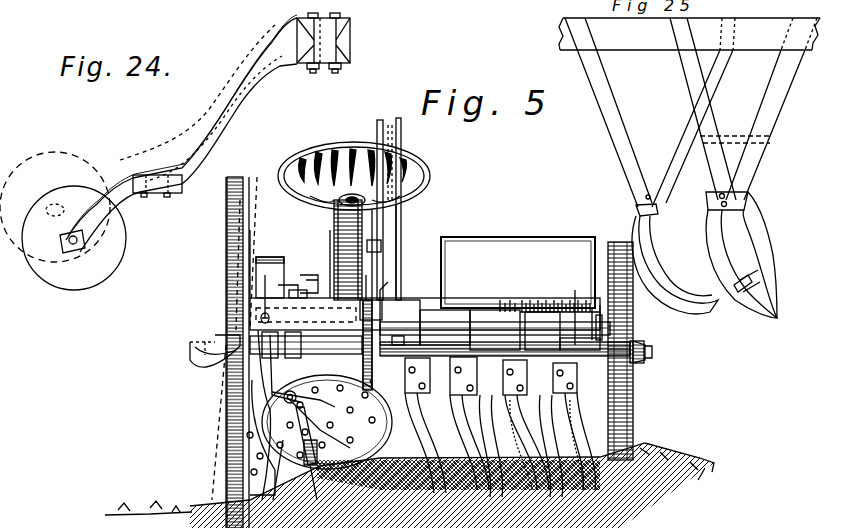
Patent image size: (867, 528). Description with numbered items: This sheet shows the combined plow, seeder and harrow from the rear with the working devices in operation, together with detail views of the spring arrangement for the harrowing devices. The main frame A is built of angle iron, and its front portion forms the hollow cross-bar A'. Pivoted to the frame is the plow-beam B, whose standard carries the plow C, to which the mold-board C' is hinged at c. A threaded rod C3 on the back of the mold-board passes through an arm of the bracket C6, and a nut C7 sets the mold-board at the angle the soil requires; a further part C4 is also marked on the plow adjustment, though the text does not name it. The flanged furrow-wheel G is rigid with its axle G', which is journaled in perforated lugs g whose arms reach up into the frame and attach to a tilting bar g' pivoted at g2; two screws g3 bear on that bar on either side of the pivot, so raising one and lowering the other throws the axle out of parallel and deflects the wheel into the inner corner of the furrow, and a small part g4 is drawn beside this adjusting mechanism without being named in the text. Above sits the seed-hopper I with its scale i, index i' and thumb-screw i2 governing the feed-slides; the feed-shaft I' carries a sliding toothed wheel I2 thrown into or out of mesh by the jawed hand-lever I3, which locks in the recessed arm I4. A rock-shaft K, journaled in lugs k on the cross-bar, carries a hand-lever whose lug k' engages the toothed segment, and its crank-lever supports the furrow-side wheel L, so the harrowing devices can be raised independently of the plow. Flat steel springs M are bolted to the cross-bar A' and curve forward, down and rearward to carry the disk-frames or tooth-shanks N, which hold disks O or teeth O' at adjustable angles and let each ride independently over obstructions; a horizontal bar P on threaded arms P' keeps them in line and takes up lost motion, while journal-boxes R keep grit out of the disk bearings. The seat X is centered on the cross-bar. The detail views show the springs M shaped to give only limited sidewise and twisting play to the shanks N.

In FIG. 24, the disk-frame or tooth-shank N is at (125, 198).
In FIG. 25, the disk-frame or tooth-shank N is at (706, 255).
In FIG. 24, the flat steel spring M is at (208, 132).
In FIG. 25, the flat steel spring M is at (622, 122).
In FIG. 25, the front cross-bar A' is at (689, 34).
In FIG. 5, the furrow-wheel G is at (223, 352).
In FIG. 5, the perforated lug g is at (215, 362).
In FIG. 5, the tilting bar g' is at (274, 299).
In FIG. 5, the pivot g2 is at (300, 289).
In FIG. 5, the screws or threaded bolts g3 is at (314, 270).
In FIG. 5, the latch g4 is at (288, 286).
In FIG. 5, the nut C7 is at (252, 418).
In FIG. 5, the plow-beam B is at (274, 415).
In FIG. 5, the main frame A is at (425, 280).
In FIG. 5, the shaft or axle G' is at (306, 345).
In FIG. 5, the seat X is at (420, 170).
In FIG. 5, the lug k' is at (404, 209).
In FIG. 5, the jawed hand-lever I3 is at (395, 225).
In FIG. 5, the recessed arm I4 is at (384, 250).
In FIG. 5, the toothed wheel I2 is at (384, 294).
In FIG. 5, the feed-shaft I' is at (495, 319).
In FIG. 5, the rock-shaft K is at (518, 272).
In FIG. 5, the seed-hopper I is at (518, 272).
In FIG. 5, the scale i is at (507, 300).
In FIG. 5, the index i' is at (560, 315).
In FIG. 5, the thumb-screw i2 is at (602, 320).
In FIG. 5, the journal-box R is at (400, 322).
In FIG. 5, the horizontal bar P is at (499, 376).
In FIG. 5, the threaded arm P' is at (623, 327).
In FIG. 5, the disk O is at (522, 460).
In FIG. 5, the tooth or knife O' is at (510, 446).
In FIG. 5, the furrow-side wheel L is at (634, 272).
In FIG. 5, the perforated lug k is at (623, 361).
In FIG. 5, the plow C is at (319, 425).
In FIG. 5, the mold-board C' is at (356, 397).
In FIG. 5, the threaded rod C3 is at (313, 398).
In FIG. 5, the disk arm C4 is at (320, 424).
In FIG. 5, the bracket C6 is at (294, 453).
In FIG. 5, the hinge c is at (295, 395).